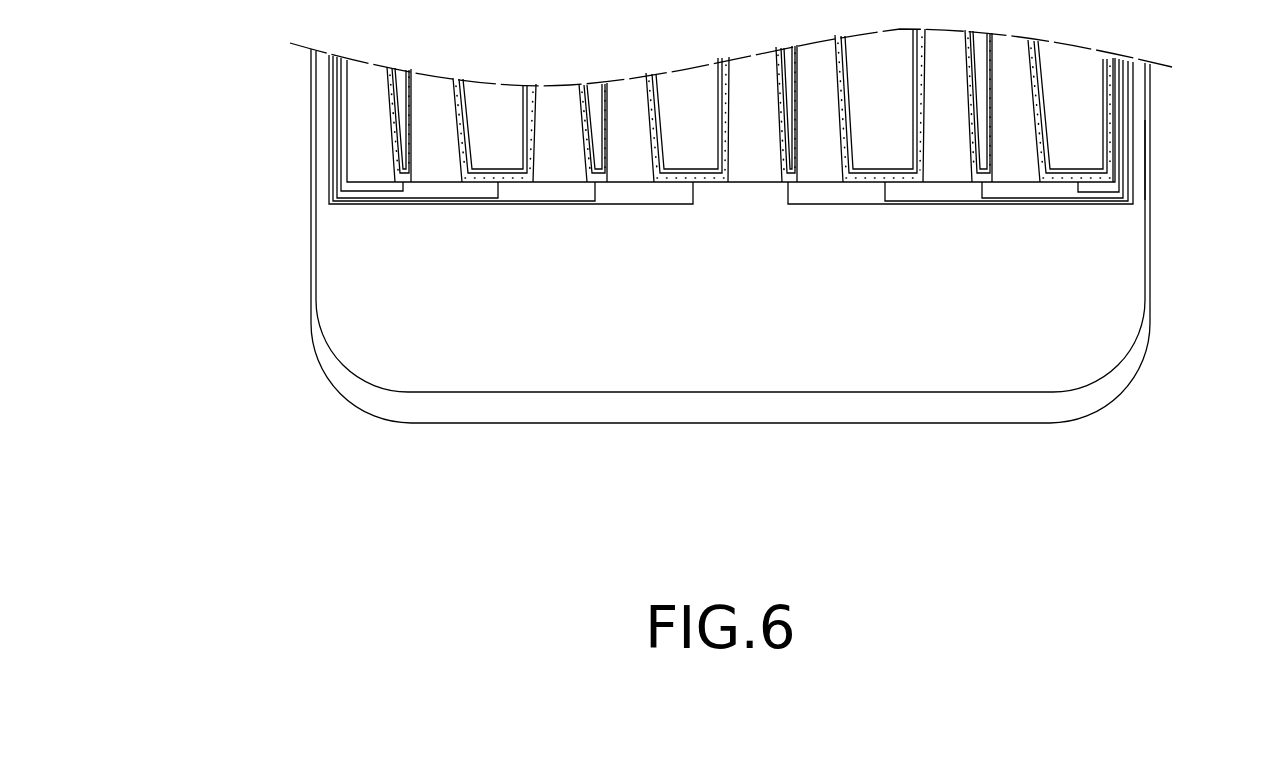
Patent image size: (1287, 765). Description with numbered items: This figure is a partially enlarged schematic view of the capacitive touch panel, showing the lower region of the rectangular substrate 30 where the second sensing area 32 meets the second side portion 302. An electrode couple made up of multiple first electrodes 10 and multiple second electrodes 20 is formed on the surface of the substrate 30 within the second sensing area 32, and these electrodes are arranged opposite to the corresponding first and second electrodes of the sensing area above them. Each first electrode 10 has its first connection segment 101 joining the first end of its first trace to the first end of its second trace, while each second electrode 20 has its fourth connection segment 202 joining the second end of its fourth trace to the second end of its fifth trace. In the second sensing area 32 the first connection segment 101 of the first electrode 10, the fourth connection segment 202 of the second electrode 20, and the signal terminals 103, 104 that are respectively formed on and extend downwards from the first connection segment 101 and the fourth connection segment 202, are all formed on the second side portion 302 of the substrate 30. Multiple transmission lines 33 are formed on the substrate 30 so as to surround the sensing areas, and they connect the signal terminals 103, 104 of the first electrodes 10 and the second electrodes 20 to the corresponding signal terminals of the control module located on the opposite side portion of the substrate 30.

The first electrode 10 is at (357, 147).
The second electrode 20 is at (398, 93).
The substrate 30 is at (310, 308).
The second sensing area 32 is at (1142, 162).
The transmission lines 33 is at (1128, 117).
The first connection segment 101 is at (398, 178).
The signal terminal 103 is at (400, 187).
The signal terminal 104 is at (500, 186).
The fourth connection segment 202 is at (523, 182).
The second side portion 302 is at (900, 218).